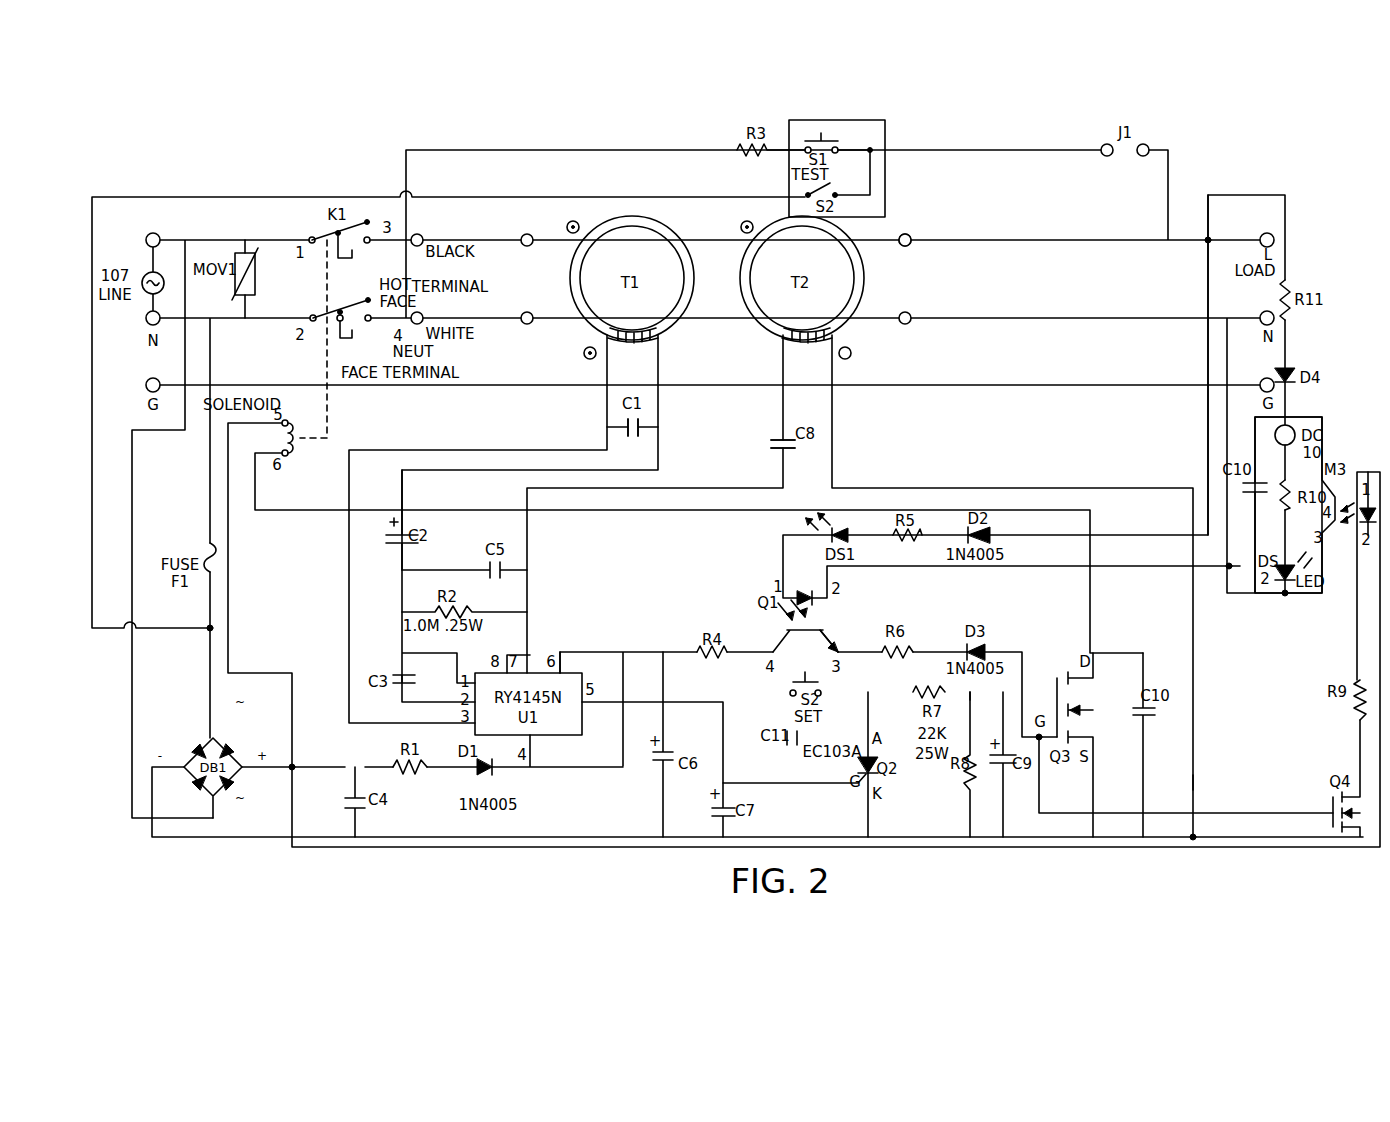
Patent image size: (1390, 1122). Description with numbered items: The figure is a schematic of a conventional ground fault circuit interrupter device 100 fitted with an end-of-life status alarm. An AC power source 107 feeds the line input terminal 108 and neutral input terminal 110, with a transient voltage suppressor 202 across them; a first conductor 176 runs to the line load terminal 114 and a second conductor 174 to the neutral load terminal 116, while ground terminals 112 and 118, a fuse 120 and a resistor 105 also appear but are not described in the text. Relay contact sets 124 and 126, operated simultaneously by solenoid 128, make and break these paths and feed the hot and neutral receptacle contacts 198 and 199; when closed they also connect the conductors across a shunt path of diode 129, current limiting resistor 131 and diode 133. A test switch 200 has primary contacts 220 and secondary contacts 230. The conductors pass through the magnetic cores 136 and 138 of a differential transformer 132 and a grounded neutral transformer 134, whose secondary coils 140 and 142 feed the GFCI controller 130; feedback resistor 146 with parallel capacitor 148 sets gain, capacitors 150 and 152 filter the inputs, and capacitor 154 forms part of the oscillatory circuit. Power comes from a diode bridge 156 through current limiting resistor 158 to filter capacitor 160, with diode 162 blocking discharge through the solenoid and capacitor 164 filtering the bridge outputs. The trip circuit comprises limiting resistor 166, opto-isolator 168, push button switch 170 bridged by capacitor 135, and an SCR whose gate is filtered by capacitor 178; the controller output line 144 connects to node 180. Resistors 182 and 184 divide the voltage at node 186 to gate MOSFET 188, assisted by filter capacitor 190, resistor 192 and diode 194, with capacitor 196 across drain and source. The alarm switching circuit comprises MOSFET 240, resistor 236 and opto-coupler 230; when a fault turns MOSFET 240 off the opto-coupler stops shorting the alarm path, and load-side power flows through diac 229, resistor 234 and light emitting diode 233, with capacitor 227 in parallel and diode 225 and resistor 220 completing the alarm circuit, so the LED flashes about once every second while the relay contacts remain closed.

The ground fault circuit interrupter device 100 is at (297, 174).
The resistor R3 105 is at (736, 147).
The AC power source 107 is at (143, 283).
The AC line input terminal 108 is at (147, 236).
The AC neutral input terminal 110 is at (147, 318).
The line ground terminal 112 is at (147, 385).
The AC line output terminal 114 is at (1263, 234).
The AC neutral output terminal 116 is at (1263, 312).
The load ground terminal 118 is at (1263, 378).
The fuse F1 conductor 120 is at (168, 240).
The first relay contact set 124 is at (328, 238).
The second relay contact set 126 is at (328, 314).
The solenoid 128 is at (295, 455).
The diode 129 is at (848, 533).
The GFCI controller 130 is at (532, 660).
The current limiting resistor 131 is at (920, 534).
The differential transformer 132 is at (686, 250).
The diode 133 is at (992, 534).
The grounded neutral transformer 134 is at (856, 250).
The capacitor 135 is at (784, 746).
The magnetic core 136 is at (592, 253).
The magnetic core 138 is at (766, 253).
The secondary coil 140 is at (618, 330).
The secondary coil 142 is at (794, 330).
The output line 144 is at (585, 704).
The feedback resistor 146 is at (465, 610).
The capacitor 148 is at (487, 563).
The capacitor 150 is at (644, 422).
The capacitor 152 is at (398, 674).
The capacitor 154 is at (777, 440).
The diode bridge 156 is at (216, 738).
The current limiting resistor 158 is at (413, 770).
The filter capacitor 160 is at (659, 766).
The diode 162 is at (480, 772).
The capacitor 164 is at (350, 812).
The limiting resistor 166 is at (730, 652).
The opto-isolator 168 is at (818, 617).
The push button switch 170 is at (824, 690).
The second conductor 174 is at (492, 314).
The first conductor 176 is at (492, 236).
The capacitor 178 is at (719, 812).
The node 180 is at (841, 648).
The resistor 182 is at (923, 698).
The resistor 184 is at (966, 782).
The node 186 is at (970, 693).
The MOSFET 188 is at (1080, 710).
The filter capacitor 190 is at (1013, 764).
The resistor 192 is at (910, 648).
The diode 194 is at (988, 648).
The capacitor 196 is at (1152, 716).
The hot receptacle contact 198 is at (352, 250).
The neutral receptacle contact 199 is at (352, 330).
The test switch 200 is at (855, 122).
The transient voltage suppressor 202 is at (262, 277).
The primary test switch contacts 220 is at (830, 148).
The diode 225 is at (1322, 361).
The capacitor 227 is at (1232, 460).
The diac 229 is at (1306, 405).
The opto-coupler 230 is at (830, 196).
The light emitting diode 233 is at (1285, 596).
The resistor 234 is at (1255, 535).
The resistor 236 is at (1350, 710).
The MOSFET 240 is at (1325, 784).